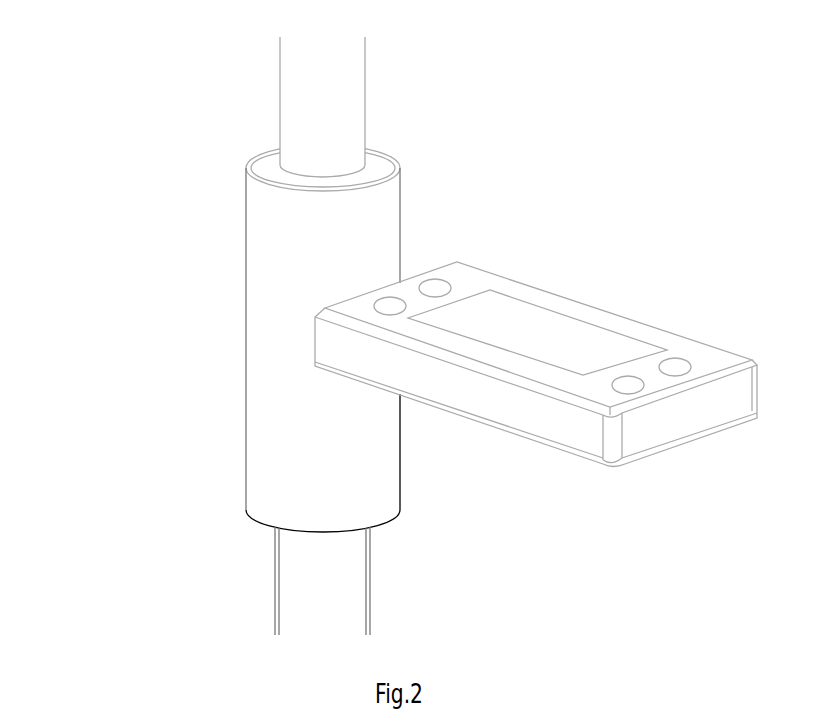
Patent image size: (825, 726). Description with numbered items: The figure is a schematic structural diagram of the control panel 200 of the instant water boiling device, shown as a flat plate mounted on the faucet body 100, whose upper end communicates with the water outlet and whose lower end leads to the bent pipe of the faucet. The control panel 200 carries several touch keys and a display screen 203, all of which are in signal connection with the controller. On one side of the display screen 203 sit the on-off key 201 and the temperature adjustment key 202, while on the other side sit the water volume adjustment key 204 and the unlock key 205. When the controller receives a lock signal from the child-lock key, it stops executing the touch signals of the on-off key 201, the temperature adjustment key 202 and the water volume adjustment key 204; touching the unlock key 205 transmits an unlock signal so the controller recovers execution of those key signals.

The faucet body 100 is at (267, 588).
The control panel 200 is at (692, 423).
The on-off key 201 is at (388, 303).
The temperature adjustment key 202 is at (437, 285).
The display screen 203 is at (535, 322).
The water volume adjustment key 204 is at (625, 383).
The unlock key 205 is at (677, 365).